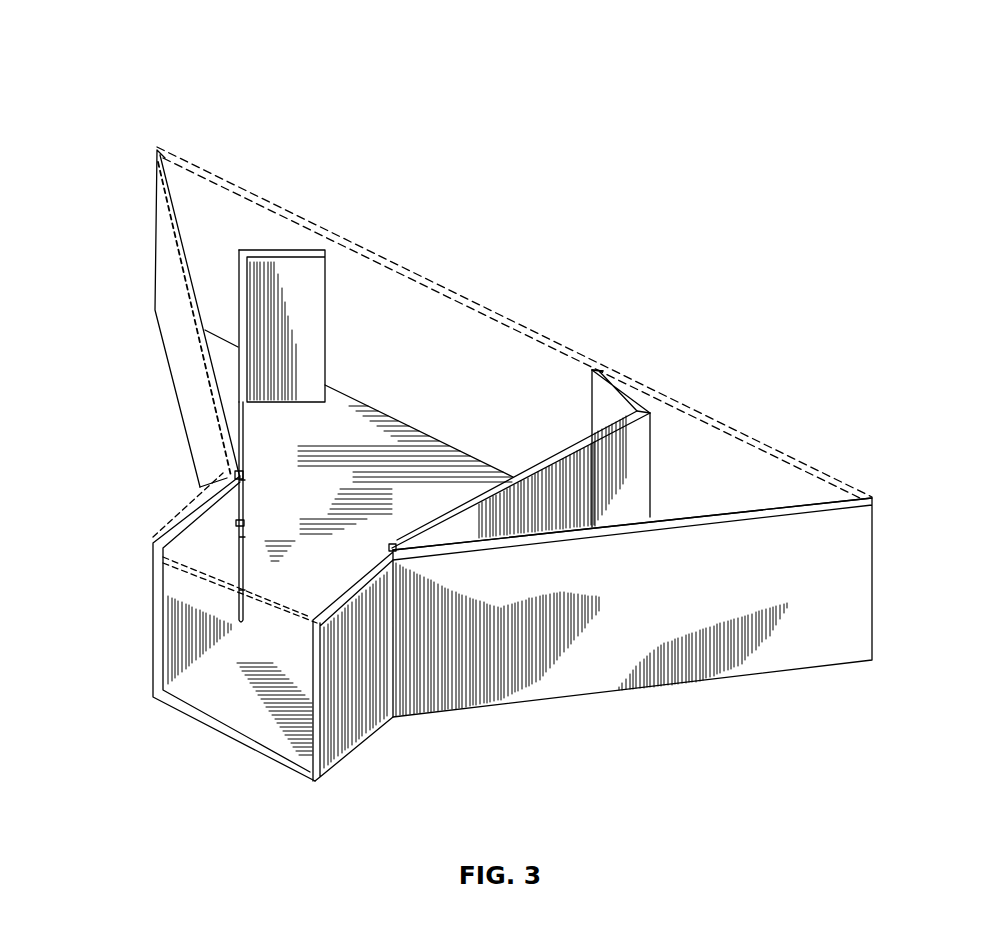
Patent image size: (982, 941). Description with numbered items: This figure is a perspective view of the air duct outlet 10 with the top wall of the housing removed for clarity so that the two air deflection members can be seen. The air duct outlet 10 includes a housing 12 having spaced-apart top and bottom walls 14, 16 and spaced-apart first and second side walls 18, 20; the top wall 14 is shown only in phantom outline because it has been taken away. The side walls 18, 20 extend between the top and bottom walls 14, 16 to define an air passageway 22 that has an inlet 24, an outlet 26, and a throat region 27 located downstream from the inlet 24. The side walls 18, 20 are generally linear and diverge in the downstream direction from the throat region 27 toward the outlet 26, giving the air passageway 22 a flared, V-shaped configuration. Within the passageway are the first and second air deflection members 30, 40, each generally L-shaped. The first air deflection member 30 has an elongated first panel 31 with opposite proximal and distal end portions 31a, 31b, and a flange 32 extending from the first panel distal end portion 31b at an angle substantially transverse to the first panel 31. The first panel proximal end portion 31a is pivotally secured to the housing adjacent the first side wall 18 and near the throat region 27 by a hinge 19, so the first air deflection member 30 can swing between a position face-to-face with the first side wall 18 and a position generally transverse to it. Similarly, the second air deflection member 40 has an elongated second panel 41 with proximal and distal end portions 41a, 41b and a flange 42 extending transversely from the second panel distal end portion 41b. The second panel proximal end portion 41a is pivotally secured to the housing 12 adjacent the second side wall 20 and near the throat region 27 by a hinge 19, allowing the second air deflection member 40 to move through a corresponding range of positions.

The air duct outlet 10 is at (267, 138).
The housing 12 is at (767, 690).
The top wall 14 is at (475, 302).
The bottom wall 16 is at (283, 510).
The first side wall 18 is at (201, 308).
The hinge 19 is at (267, 587).
The second side wall 20 is at (727, 510).
The air passageway 22 is at (256, 650).
The inlet 24 is at (310, 718).
The outlet 26 is at (810, 497).
The throat region 27 is at (213, 516).
The first air deflection member 30 is at (283, 238).
The first panel 31 is at (243, 377).
The first panel proximal end portion 31a is at (242, 458).
The first panel distal end portion 31b is at (240, 293).
The flange 32 is at (295, 287).
The second air deflection member 40 is at (655, 398).
The second panel 41 is at (609, 480).
The second panel proximal end portion 41a is at (398, 542).
The second panel distal end portion 41b is at (637, 432).
The flange 42 is at (622, 407).